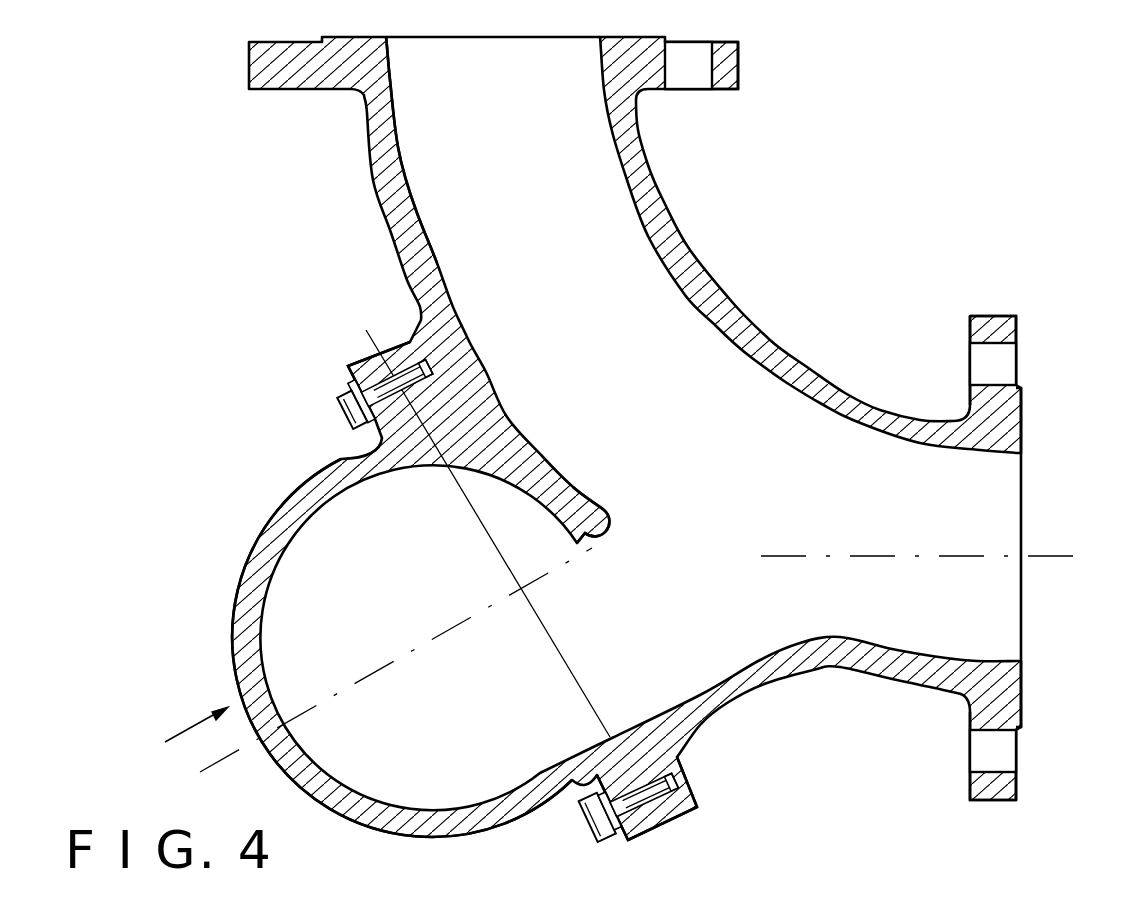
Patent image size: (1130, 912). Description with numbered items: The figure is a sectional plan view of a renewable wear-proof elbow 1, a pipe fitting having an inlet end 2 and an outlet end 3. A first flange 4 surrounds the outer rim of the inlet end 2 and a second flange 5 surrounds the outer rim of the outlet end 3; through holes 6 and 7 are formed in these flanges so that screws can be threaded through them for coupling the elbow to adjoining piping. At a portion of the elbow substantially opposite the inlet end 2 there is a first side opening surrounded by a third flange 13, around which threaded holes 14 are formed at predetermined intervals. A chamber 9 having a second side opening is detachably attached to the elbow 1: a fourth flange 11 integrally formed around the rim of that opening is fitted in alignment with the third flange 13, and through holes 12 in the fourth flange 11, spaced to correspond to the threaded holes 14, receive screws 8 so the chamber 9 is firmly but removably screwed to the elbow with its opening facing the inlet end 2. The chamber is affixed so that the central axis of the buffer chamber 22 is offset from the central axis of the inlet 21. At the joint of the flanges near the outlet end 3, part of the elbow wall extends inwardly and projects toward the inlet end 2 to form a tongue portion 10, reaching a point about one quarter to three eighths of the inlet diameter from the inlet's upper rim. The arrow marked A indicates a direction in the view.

The renewable wear-proof elbow 1 is at (732, 310).
The inlet end 2 is at (1020, 621).
The outlet end 3 is at (408, 110).
The first flange 4 is at (997, 322).
The second flange 5 is at (739, 64).
The through holes 6 is at (1016, 358).
The through holes 7 is at (698, 86).
The screws 8 is at (338, 397).
The chamber 9 is at (232, 611).
The tongue portion 10 is at (590, 515).
The fourth flange 11 is at (352, 368).
The through holes 12 is at (368, 362).
The third flange 13 is at (690, 793).
The threaded holes 14 is at (403, 340).
The central axis of the inlet 21 is at (1048, 560).
The central axis of the buffer chamber 22 is at (382, 665).
The flow direction A is at (176, 737).